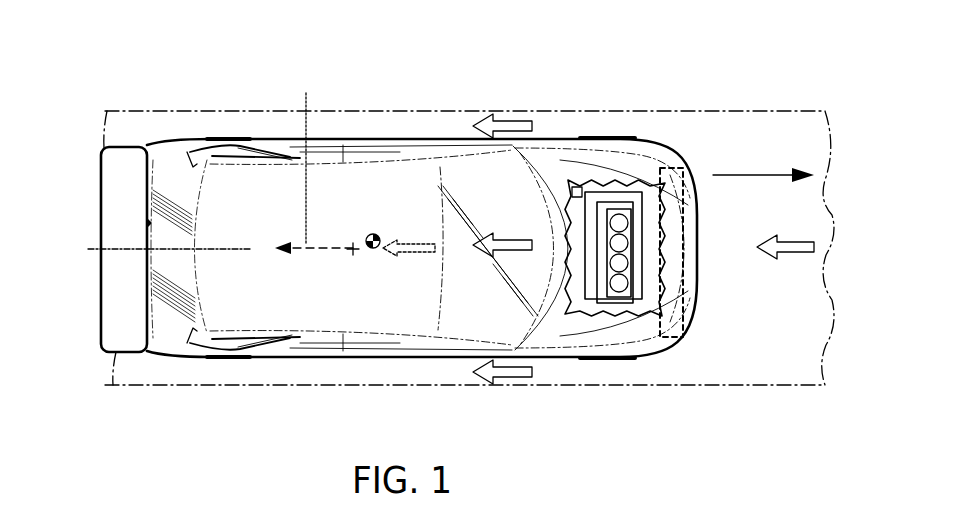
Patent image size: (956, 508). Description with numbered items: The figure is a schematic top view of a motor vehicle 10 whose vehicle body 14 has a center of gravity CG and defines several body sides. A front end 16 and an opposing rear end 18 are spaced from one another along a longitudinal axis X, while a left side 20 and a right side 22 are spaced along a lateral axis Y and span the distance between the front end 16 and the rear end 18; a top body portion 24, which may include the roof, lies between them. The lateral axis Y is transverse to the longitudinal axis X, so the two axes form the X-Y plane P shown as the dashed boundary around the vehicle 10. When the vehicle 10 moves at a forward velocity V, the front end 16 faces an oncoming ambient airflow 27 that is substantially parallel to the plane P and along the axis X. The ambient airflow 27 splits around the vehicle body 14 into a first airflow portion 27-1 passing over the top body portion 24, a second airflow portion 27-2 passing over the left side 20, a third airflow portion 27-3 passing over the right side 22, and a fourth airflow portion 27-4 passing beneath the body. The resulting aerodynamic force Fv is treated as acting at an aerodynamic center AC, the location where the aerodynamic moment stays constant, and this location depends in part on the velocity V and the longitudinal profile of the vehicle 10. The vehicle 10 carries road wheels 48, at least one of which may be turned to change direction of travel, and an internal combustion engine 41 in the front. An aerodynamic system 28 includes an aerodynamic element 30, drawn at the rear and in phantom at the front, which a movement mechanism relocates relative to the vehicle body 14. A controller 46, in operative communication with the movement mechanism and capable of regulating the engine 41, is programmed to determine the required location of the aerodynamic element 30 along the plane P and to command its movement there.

The motor vehicle 10 is at (707, 388).
The vehicle body 14 is at (372, 196).
The front end 16 is at (698, 282).
The rear end 18 is at (152, 313).
The left side 20 is at (428, 140).
The right side 22 is at (400, 358).
The top body portion 24 is at (314, 286).
The ambient airflow 27 is at (793, 235).
The first airflow portion 27-1 is at (500, 232).
The second airflow portion 27-2 is at (508, 114).
The third airflow portion 27-3 is at (508, 384).
The fourth airflow portion 27-4 is at (408, 258).
The aerodynamic system 28 is at (101, 172).
The aerodynamic element 30 is at (137, 136).
The internal combustion engine 41 is at (618, 303).
The controller 46 is at (592, 186).
The road wheels 48 is at (222, 138).
The longitudinal axis X is at (136, 256).
The lateral axis Y is at (311, 103).
The X-Y plane P is at (752, 111).
The forward velocity V is at (742, 174).
The center of gravity CG is at (372, 233).
The aerodynamic center AC is at (352, 250).
The aerodynamic force Fv is at (322, 240).